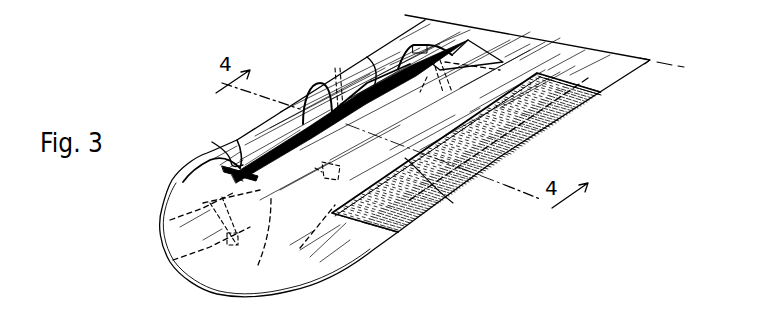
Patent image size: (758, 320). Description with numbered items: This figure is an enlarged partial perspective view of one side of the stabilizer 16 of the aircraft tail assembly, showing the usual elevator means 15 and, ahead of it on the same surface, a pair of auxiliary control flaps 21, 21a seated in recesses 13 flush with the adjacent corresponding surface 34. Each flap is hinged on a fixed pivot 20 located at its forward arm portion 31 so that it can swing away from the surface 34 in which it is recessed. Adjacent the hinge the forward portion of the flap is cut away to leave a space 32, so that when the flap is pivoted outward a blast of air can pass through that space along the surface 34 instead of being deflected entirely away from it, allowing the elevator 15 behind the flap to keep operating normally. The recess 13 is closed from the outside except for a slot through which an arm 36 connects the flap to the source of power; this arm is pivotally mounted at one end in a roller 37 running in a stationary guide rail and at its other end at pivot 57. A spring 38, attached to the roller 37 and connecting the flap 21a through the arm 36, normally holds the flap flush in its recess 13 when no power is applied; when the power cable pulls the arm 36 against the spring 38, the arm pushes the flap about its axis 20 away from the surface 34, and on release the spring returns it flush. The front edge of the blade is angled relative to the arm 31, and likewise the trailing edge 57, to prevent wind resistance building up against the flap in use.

The recess 13 is at (471, 55).
The elevator means 15 is at (582, 77).
The stabilizer 16 is at (625, 62).
The fixed pivot 20 is at (412, 64).
The auxiliary control flap 21 is at (452, 40).
The auxiliary control flap 21a is at (173, 261).
The forward arm portion 31 is at (427, 46).
The cut-away forward portion (space) 32 is at (367, 57).
The corresponding surface 34 is at (466, 152).
The arm 36 is at (243, 181).
The roller 37 is at (347, 68).
The spring 38 is at (379, 170).
The pivot (trailing edge) 57 is at (338, 178).